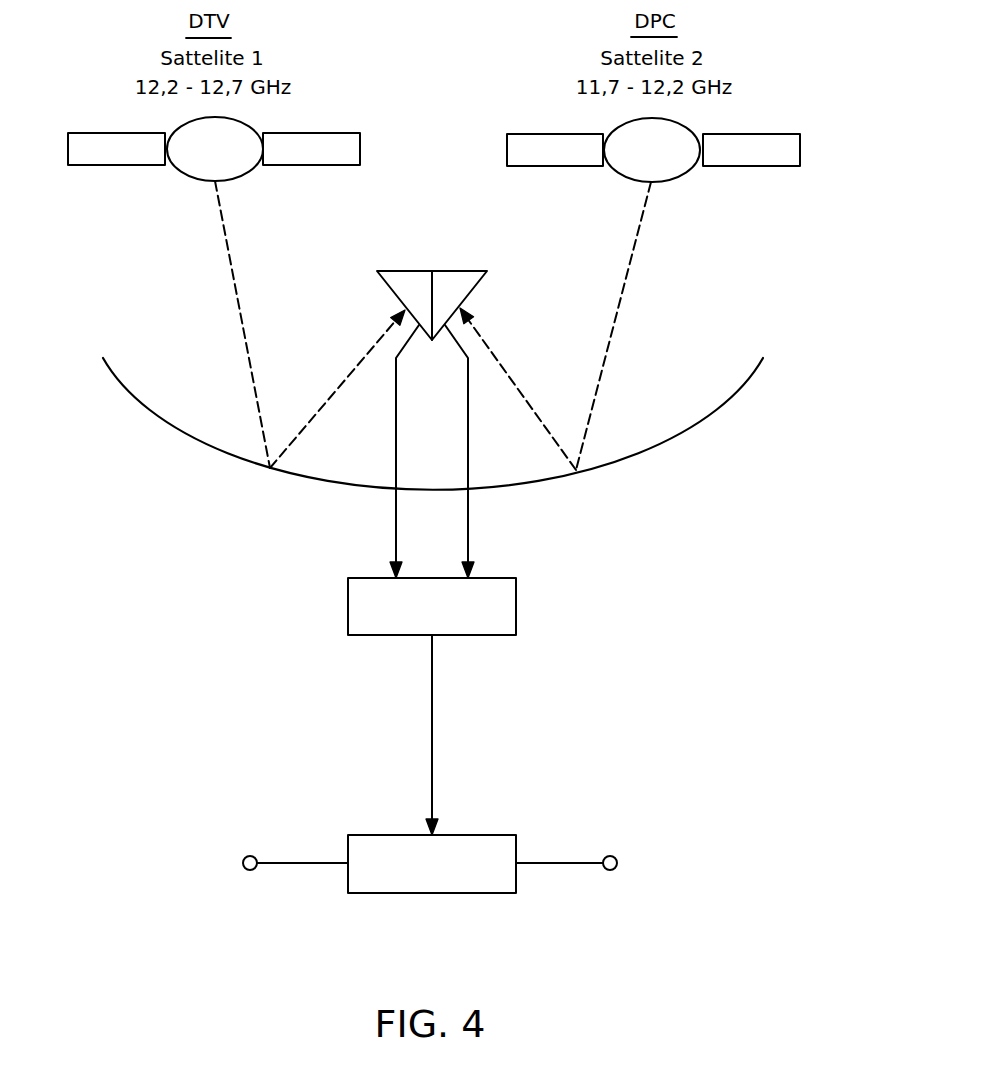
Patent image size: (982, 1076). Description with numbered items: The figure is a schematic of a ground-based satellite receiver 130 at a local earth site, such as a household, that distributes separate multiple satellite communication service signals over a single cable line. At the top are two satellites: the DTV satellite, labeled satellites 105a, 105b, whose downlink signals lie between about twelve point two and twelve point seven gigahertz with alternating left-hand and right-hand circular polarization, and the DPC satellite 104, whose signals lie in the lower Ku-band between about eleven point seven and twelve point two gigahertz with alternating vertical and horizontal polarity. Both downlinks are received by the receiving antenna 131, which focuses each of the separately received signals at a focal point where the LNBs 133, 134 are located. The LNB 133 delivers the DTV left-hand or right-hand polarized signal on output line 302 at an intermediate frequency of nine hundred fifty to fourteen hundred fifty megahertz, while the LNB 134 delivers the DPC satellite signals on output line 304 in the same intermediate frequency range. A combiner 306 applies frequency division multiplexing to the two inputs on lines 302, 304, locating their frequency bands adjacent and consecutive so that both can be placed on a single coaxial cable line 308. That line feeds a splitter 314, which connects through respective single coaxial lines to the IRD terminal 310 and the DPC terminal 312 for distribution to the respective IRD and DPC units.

The satellite 104 is at (638, 152).
The satellite 105a is at (214, 292).
The satellite 105b is at (198, 169).
The ground-based satellite receiver 130 is at (489, 363).
The receiving antenna 131 is at (200, 447).
The LNB 133 is at (391, 289).
The LNB 134 is at (473, 293).
The output line 302 is at (394, 531).
The output line 304 is at (470, 533).
The combiner 306 is at (348, 607).
The single coaxial cable line 308 is at (432, 700).
The terminal 310 is at (608, 856).
The terminal 312 is at (256, 857).
The splitter 314 is at (362, 835).